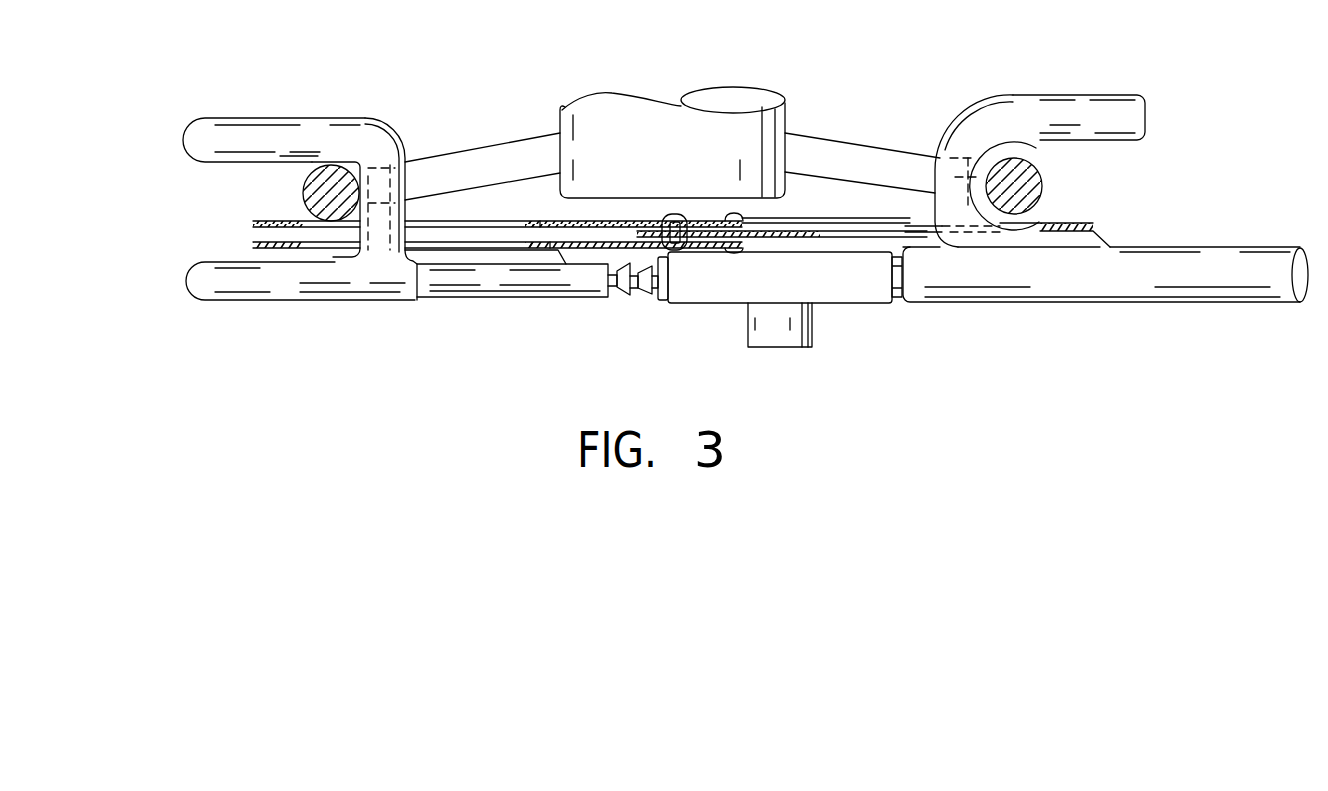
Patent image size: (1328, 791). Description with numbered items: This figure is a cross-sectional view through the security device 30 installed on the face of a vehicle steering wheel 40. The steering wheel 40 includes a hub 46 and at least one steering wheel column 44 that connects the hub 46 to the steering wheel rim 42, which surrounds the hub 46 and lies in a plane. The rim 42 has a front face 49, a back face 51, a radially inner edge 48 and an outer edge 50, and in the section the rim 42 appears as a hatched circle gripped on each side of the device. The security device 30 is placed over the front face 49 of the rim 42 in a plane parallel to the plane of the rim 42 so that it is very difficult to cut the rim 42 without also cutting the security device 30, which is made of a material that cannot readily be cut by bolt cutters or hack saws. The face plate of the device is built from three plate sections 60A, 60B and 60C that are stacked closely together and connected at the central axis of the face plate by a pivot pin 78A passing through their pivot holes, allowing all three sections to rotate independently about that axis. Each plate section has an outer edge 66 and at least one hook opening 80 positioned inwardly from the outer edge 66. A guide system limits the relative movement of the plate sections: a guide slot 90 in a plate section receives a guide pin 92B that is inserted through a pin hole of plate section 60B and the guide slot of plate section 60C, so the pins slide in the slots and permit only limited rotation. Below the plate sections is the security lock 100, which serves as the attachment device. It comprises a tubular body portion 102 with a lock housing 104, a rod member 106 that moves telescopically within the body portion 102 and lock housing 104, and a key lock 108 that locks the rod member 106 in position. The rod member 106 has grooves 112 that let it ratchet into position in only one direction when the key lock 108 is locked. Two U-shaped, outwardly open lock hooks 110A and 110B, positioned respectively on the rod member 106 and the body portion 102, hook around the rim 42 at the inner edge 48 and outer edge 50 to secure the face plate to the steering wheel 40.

The security device 30 is at (278, 258).
The vehicle steering wheel 40 is at (1035, 158).
The steering wheel rim 42 is at (320, 167).
The steering wheel column 44 is at (460, 163).
The hub 46 is at (773, 147).
The radially inner edge 48 is at (968, 182).
The front face 49 is at (333, 223).
The outer edge 50 is at (1043, 183).
The back face 51 is at (331, 165).
The plate section 60A is at (531, 250).
The plate section 60B is at (806, 237).
The plate section 60C is at (532, 218).
The outer edge 66 is at (253, 245).
The pivot pin 78A is at (670, 216).
The hook opening 80 is at (462, 224).
The guide slot 90 is at (550, 244).
The guide pin 92B is at (736, 212).
The security lock 100 is at (870, 303).
The tubular body portion 102 is at (1238, 278).
The lock housing 104 is at (705, 296).
The rod member 106 is at (485, 282).
The key lock 108 is at (772, 348).
The lock hook 110A is at (238, 132).
The lock hook 110B is at (1120, 102).
The grooves 112 is at (629, 290).